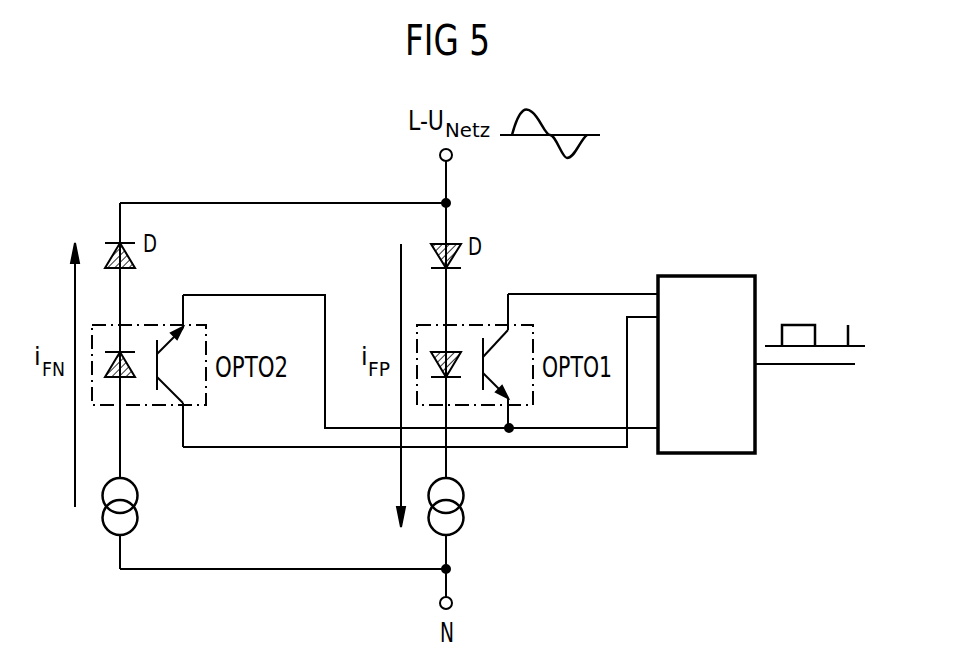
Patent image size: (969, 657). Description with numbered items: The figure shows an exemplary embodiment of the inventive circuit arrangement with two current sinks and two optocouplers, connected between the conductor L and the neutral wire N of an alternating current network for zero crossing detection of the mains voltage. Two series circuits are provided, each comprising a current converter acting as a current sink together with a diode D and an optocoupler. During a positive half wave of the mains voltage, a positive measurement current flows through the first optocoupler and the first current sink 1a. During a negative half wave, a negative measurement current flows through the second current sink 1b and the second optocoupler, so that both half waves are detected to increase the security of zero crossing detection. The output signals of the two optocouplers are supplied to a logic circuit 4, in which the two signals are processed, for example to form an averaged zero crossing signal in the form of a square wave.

The first current sink 1a is at (464, 517).
The second current sink 1b is at (139, 517).
The logic circuit 4 is at (705, 455).